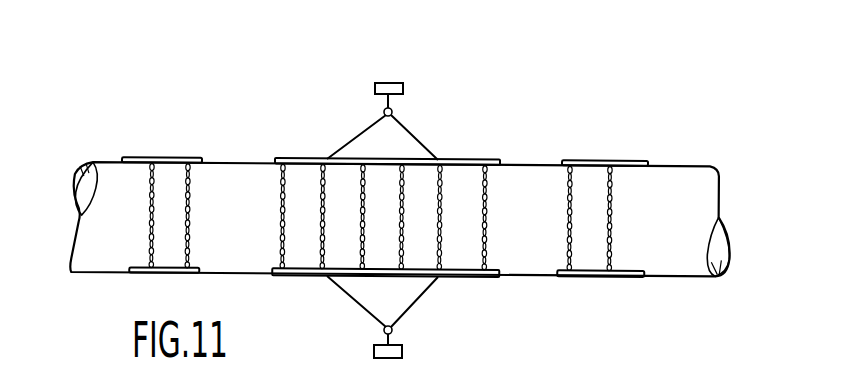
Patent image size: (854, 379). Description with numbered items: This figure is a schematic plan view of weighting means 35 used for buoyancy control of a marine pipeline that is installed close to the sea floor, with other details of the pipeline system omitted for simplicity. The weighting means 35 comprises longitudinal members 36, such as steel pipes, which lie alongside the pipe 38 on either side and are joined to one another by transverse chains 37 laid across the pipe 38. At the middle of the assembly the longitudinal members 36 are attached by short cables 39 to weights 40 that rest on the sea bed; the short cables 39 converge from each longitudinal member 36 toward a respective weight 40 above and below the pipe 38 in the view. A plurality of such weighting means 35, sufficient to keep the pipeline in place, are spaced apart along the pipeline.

The weighting means 35 is at (384, 184).
The longitudinal members 36 is at (319, 151).
The transverse chains 37 is at (380, 217).
The pipe 38 is at (683, 172).
The short cables 39 is at (356, 128).
The weights 40 is at (403, 86).